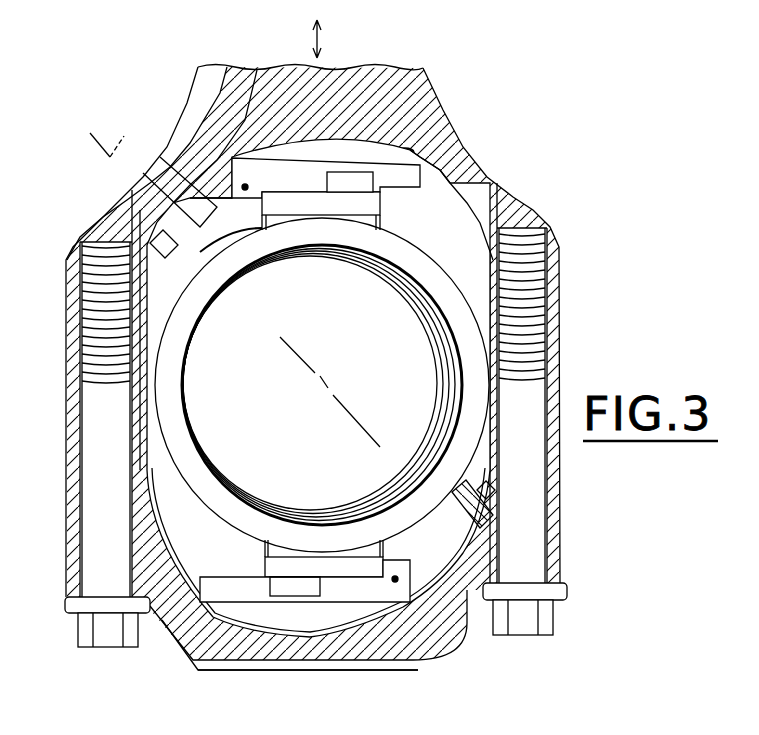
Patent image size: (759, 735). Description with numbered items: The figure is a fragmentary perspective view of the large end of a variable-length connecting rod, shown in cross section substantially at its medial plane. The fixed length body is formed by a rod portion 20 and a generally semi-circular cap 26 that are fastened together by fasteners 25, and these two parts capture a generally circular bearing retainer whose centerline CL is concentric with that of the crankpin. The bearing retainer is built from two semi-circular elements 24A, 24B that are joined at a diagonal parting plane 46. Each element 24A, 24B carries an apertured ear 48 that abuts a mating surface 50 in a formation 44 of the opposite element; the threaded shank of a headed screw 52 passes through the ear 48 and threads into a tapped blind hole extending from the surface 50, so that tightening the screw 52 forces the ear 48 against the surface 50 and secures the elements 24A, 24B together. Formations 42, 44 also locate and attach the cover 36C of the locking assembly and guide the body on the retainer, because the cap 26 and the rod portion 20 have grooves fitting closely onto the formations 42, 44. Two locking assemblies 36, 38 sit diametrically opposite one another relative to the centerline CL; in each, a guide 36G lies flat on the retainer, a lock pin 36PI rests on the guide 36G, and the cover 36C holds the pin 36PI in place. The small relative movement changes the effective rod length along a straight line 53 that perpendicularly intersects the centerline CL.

The rod portion 20 is at (430, 85).
The semi-circular element 24A is at (443, 193).
The semi-circular element 24B is at (193, 557).
The fasteners 25 is at (90, 322).
The rod portion (cap) 26 is at (200, 665).
The locking assembly 36 is at (263, 153).
The cover 36C is at (283, 163).
The lock pin 36PI is at (350, 180).
The guide (base) 36G is at (351, 207).
The locking assembly 38 is at (398, 650).
The formation 42 is at (432, 193).
The formation 44 is at (230, 226).
The parting plane 46 is at (113, 134).
The apertured ear 48 is at (173, 237).
The mating surface 50 is at (193, 285).
The headed screw 52 is at (153, 243).
The straight line 53 is at (322, 42).
The centerline CL is at (322, 382).